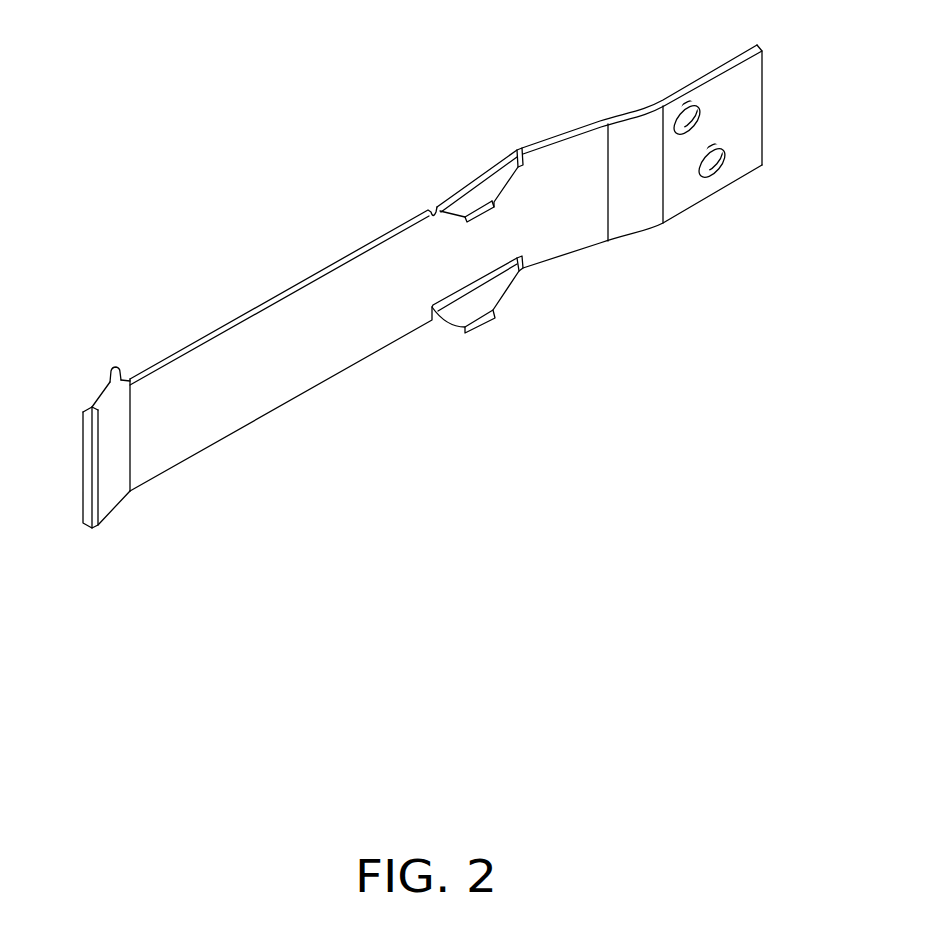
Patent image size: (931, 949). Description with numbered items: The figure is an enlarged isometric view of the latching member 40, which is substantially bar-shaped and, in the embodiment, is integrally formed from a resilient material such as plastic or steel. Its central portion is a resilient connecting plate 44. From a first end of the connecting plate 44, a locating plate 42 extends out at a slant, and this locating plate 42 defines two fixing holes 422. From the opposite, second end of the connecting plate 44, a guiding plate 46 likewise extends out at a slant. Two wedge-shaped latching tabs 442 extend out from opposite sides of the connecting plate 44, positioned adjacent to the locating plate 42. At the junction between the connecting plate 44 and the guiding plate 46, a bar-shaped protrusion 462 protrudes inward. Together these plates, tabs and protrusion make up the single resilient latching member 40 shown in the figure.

The latching member 40 is at (334, 148).
The locating plate 42 is at (742, 158).
The fixing holes 422 is at (685, 113).
The connecting plate 44 is at (287, 363).
The latching tabs 442 is at (485, 320).
The guiding plate 46 is at (110, 487).
The protrusion 462 is at (115, 367).